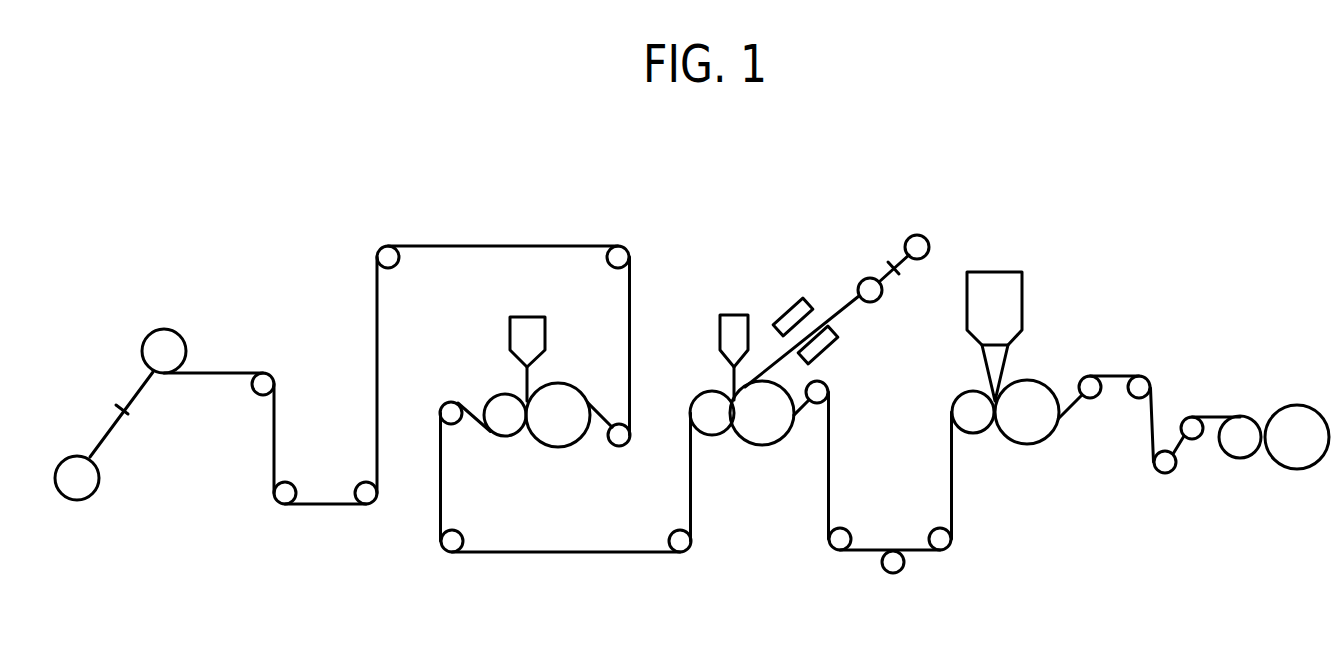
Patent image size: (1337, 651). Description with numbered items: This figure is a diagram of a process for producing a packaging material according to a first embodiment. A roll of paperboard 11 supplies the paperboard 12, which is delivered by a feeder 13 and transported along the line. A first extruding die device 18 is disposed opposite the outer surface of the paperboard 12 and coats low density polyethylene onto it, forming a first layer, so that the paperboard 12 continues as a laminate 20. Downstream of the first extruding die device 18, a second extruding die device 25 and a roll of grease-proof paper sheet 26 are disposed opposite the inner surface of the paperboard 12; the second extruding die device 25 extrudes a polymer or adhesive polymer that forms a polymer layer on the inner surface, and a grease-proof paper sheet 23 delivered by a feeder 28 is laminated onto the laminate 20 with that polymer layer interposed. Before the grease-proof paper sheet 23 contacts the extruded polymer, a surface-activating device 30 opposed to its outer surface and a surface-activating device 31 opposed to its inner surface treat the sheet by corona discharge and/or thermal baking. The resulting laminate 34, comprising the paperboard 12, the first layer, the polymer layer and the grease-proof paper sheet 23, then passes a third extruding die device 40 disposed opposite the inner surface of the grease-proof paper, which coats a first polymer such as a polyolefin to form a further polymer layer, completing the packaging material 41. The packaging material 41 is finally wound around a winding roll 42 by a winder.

The roll of paperboard 11 is at (167, 329).
The paperboard 12 is at (240, 372).
The feeder 13 is at (96, 489).
The first extruding die device 18 is at (535, 315).
The laminate 20 is at (507, 553).
The grease-proof paper sheet 23 is at (843, 292).
The second extruding die device 25 is at (732, 313).
The roll of grease-proof paper sheet 26 is at (880, 301).
The feeder 28 is at (922, 237).
The surface-activating device 30 is at (785, 310).
The surface-activating device 31 is at (833, 347).
The laminate 34 is at (827, 484).
The third extruding die device 40 is at (1007, 271).
The packaging material 41 is at (1116, 376).
The winding roll 42 is at (1287, 406).